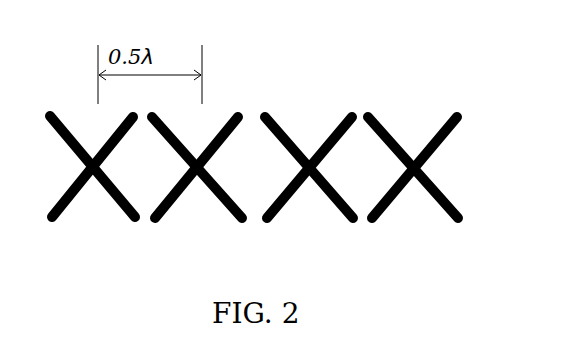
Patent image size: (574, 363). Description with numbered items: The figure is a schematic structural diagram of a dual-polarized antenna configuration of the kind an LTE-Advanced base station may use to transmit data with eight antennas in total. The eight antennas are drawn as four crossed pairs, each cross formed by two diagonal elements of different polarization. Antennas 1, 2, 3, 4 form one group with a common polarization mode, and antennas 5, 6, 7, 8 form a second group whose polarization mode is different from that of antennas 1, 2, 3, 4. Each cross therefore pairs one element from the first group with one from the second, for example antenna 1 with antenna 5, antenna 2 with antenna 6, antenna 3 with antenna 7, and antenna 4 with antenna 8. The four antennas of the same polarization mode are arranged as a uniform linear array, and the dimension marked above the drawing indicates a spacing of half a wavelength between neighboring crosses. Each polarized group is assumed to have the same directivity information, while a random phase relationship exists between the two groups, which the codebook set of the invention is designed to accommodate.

The antenna 1 is at (92, 178).
The antenna 2 is at (196, 179).
The antenna 3 is at (309, 179).
The antenna 4 is at (414, 179).
The antenna 5 is at (92, 157).
The antenna 6 is at (197, 158).
The antenna 7 is at (309, 157).
The antenna 8 is at (413, 157).